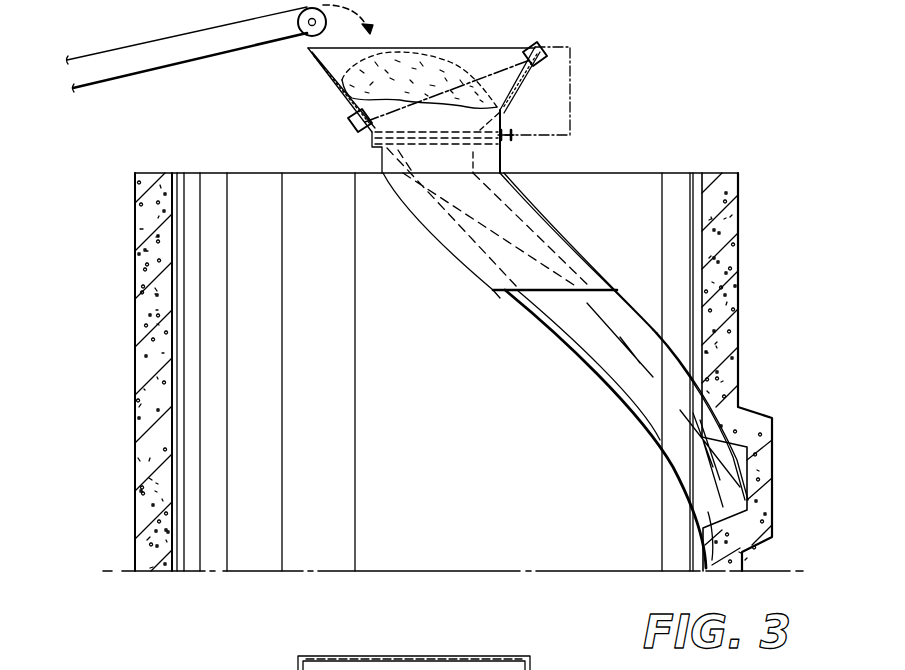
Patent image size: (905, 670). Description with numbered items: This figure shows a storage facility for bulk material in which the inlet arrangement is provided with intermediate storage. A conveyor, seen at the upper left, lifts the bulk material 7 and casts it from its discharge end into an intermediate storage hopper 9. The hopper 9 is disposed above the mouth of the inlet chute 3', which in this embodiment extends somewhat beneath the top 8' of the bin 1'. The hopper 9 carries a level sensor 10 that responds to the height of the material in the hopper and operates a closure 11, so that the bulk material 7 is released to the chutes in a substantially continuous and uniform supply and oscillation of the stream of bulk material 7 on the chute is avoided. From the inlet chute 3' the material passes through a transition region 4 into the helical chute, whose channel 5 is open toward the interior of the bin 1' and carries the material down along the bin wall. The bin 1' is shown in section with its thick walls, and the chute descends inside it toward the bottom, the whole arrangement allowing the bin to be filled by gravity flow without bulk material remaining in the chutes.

The bin 1' is at (747, 372).
The inlet chute 3' is at (520, 252).
The transition region 4 is at (567, 357).
The channel 5 is at (662, 406).
The bulk material 7 is at (407, 63).
The top of the bin 8' is at (460, 160).
The intermediate storage hopper 9 is at (520, 86).
The level sensor 10 is at (540, 54).
The closure 11 is at (515, 139).